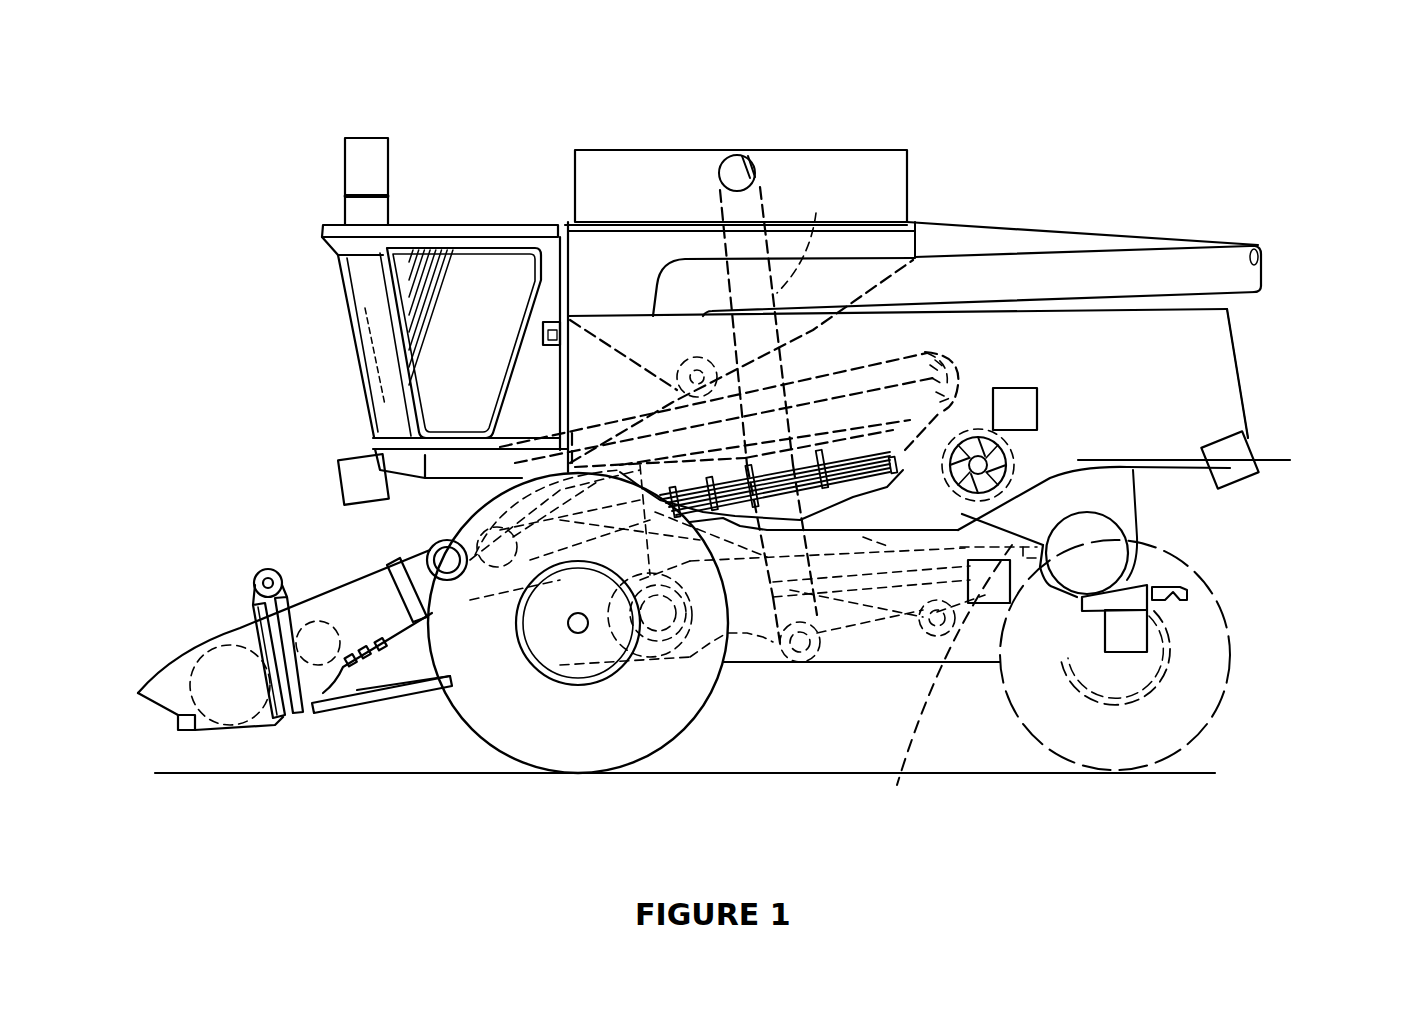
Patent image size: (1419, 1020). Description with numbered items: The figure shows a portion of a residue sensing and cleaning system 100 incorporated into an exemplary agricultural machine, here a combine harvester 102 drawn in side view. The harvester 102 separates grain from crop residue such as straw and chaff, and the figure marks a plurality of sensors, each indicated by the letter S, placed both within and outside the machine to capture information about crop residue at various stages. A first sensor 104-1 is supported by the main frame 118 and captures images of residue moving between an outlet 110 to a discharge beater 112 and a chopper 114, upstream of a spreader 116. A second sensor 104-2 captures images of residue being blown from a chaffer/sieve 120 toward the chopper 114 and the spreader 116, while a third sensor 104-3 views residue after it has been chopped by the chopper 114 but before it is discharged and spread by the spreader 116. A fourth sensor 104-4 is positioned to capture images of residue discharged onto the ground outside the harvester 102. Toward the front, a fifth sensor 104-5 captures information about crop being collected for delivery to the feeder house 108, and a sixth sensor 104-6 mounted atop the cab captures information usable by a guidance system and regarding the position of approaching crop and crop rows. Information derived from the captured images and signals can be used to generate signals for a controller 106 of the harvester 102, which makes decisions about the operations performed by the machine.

The residue sensing and cleaning system 100 is at (765, 438).
The harvester 102 is at (1153, 93).
The first sensor 104-1 is at (1037, 410).
The second sensor 104-2 is at (992, 604).
The third sensor 104-3 is at (1143, 655).
The fourth sensor 104-4 is at (1255, 447).
The fifth sensor 104-5 is at (340, 480).
The sixth sensor 104-6 is at (373, 138).
The controller 106 is at (390, 210).
The feeder house 108 is at (327, 585).
The outlet 110 is at (970, 400).
The discharge beater 112 is at (1133, 443).
The chopper 114 is at (1112, 492).
The spreader 116 is at (1193, 590).
The main frame 118 is at (1233, 330).
The chaffer/sieve 120 is at (938, 693).